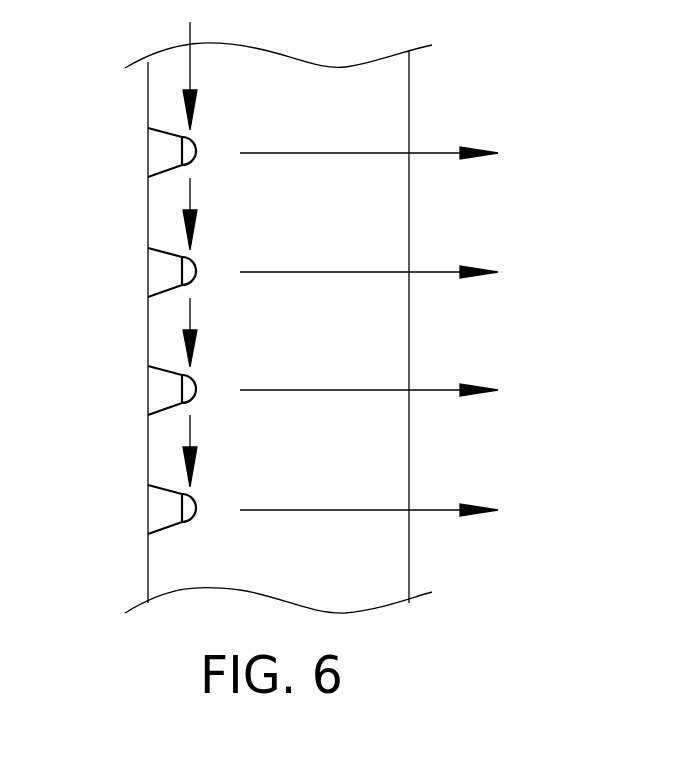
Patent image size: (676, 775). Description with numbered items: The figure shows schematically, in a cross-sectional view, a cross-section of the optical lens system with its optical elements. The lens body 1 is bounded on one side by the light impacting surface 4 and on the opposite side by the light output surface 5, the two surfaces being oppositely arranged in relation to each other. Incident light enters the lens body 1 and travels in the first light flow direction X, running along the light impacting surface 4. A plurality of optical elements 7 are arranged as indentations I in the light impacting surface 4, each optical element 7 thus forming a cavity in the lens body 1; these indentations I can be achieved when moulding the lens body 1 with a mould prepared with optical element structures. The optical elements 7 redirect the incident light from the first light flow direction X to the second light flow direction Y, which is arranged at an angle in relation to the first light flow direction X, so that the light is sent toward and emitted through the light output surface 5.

The lens body 1 is at (320, 113).
The light impacting surface 4 is at (143, 90).
The light output surface 5 is at (410, 100).
The optical elements 7 is at (163, 149).
The indentations I is at (163, 157).
The first light flow direction X is at (197, 247).
The second light flow direction Y is at (369, 316).